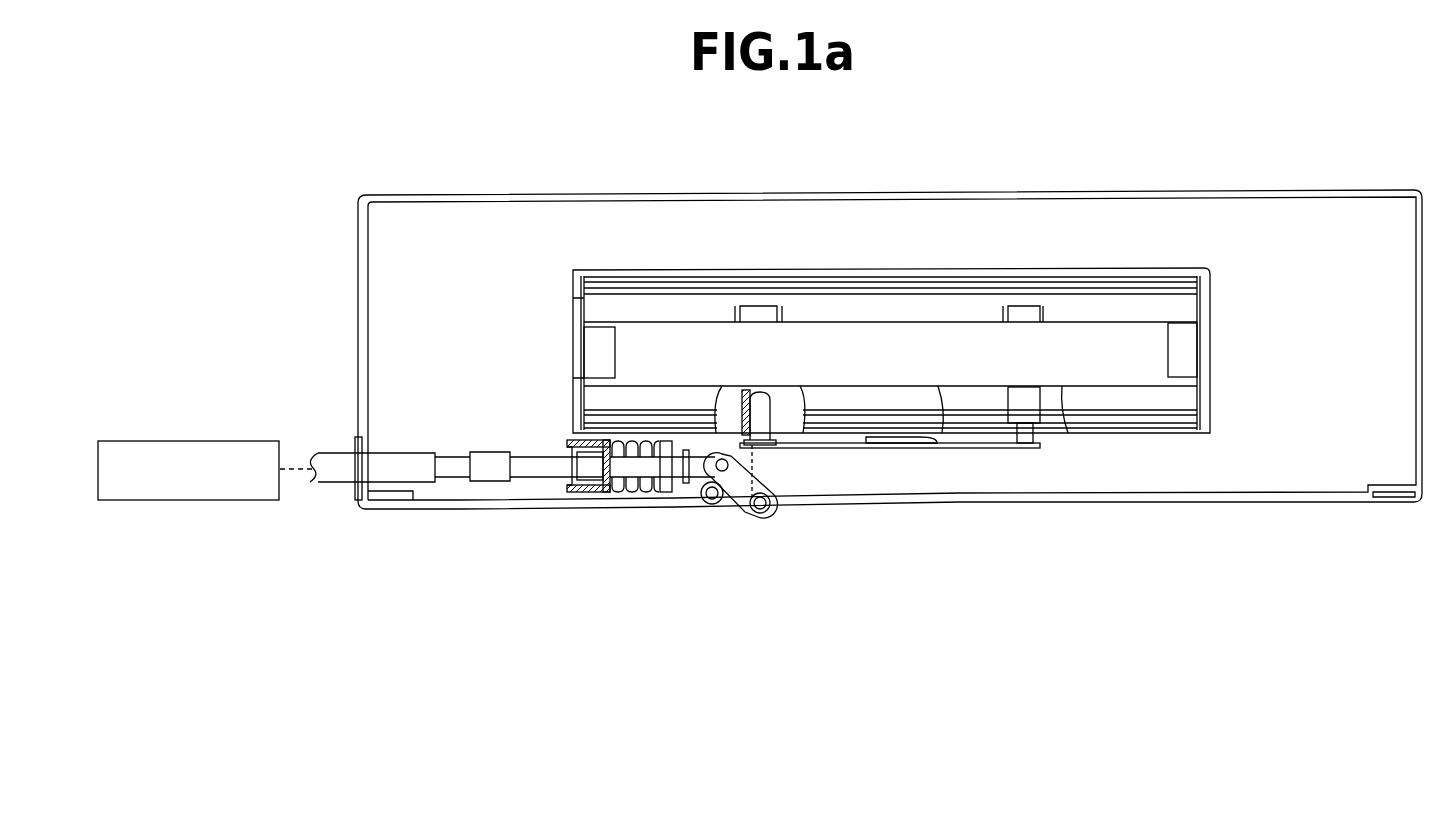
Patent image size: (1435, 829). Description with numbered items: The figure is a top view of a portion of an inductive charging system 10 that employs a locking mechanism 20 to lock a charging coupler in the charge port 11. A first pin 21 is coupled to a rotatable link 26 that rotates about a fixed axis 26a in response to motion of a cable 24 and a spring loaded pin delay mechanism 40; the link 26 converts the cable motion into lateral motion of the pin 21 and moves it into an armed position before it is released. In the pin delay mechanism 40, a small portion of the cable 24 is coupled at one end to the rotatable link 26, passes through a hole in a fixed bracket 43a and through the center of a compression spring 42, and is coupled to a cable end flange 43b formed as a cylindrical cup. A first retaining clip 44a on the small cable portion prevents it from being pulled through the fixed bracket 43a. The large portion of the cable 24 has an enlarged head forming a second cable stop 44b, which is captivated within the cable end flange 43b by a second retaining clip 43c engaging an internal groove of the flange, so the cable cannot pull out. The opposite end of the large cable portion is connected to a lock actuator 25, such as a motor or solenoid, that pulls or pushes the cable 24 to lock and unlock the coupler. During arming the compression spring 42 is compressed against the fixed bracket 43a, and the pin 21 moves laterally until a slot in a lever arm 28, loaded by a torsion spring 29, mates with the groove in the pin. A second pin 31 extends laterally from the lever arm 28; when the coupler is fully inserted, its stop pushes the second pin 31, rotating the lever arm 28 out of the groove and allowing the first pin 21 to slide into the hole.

The inductive charging system 10 is at (147, 194).
The charge port 11 is at (362, 196).
The locking mechanism 20 is at (385, 562).
The first pin 21 is at (758, 390).
The cable 24 is at (478, 452).
The lock actuator 25 is at (192, 441).
The rotatable link 26 is at (742, 517).
The fixed axis 26a is at (712, 505).
The lever arm 28 is at (833, 450).
The torsion spring 29 is at (942, 433).
The second pin 31 is at (1040, 447).
The spring loaded pin delay mechanism 40 is at (592, 530).
The compression spring 42 is at (633, 495).
The fixed bracket 43a is at (666, 493).
The cable end flange 43b is at (565, 440).
The second retaining clip 43c is at (562, 485).
The first retaining clip 44a is at (686, 505).
The second cable stop 44b is at (586, 493).